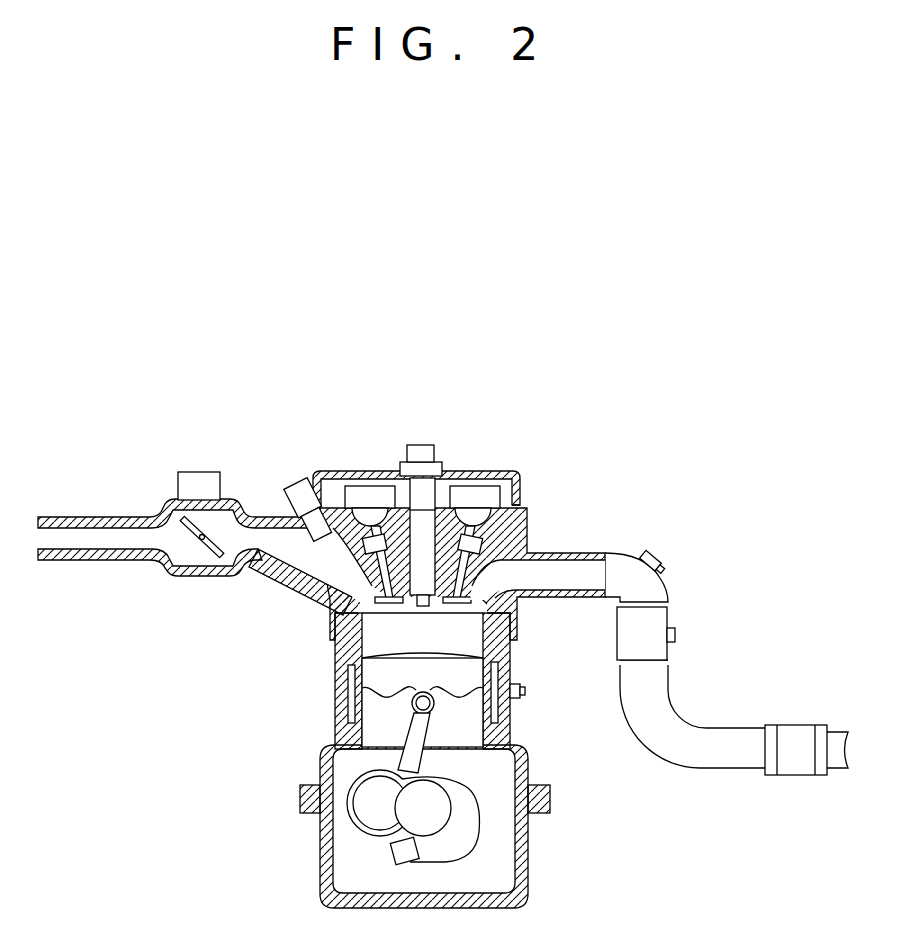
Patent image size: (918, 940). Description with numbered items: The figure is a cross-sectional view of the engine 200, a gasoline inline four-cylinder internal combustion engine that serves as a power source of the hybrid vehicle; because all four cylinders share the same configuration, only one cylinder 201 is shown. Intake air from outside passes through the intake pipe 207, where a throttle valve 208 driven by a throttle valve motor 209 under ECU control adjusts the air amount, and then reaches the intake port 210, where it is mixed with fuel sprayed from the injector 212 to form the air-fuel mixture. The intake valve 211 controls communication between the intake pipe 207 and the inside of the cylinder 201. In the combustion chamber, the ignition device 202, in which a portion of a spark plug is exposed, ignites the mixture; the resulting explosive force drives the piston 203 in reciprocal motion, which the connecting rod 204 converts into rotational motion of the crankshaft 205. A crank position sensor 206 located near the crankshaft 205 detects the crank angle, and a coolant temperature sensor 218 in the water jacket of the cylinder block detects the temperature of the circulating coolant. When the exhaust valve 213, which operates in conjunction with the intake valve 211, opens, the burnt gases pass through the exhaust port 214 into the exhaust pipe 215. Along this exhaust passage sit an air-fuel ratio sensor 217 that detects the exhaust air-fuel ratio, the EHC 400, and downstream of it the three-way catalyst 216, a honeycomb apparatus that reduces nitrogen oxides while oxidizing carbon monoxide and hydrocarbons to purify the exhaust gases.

The engine 200 is at (231, 420).
The cylinder 201 is at (368, 736).
The ignition device 202 is at (421, 444).
The piston 203 is at (345, 681).
The connecting rod 204 is at (398, 778).
The crankshaft 205 is at (428, 808).
The crank position sensor 206 is at (357, 873).
The intake pipe 207 is at (88, 548).
The throttle valve 208 is at (191, 554).
The throttle valve motor 209 is at (198, 471).
The intake port 210 is at (303, 581).
The intake valve 211 is at (337, 622).
The injector 212 is at (299, 485).
The exhaust valve 213 is at (518, 651).
The exhaust port 214 is at (521, 600).
The exhaust pipe 215 is at (683, 726).
The three-way catalyst 216 is at (794, 737).
The air-fuel ratio sensor 217 is at (650, 556).
The coolant temperature sensor 218 is at (524, 692).
The EHC 400 is at (672, 631).